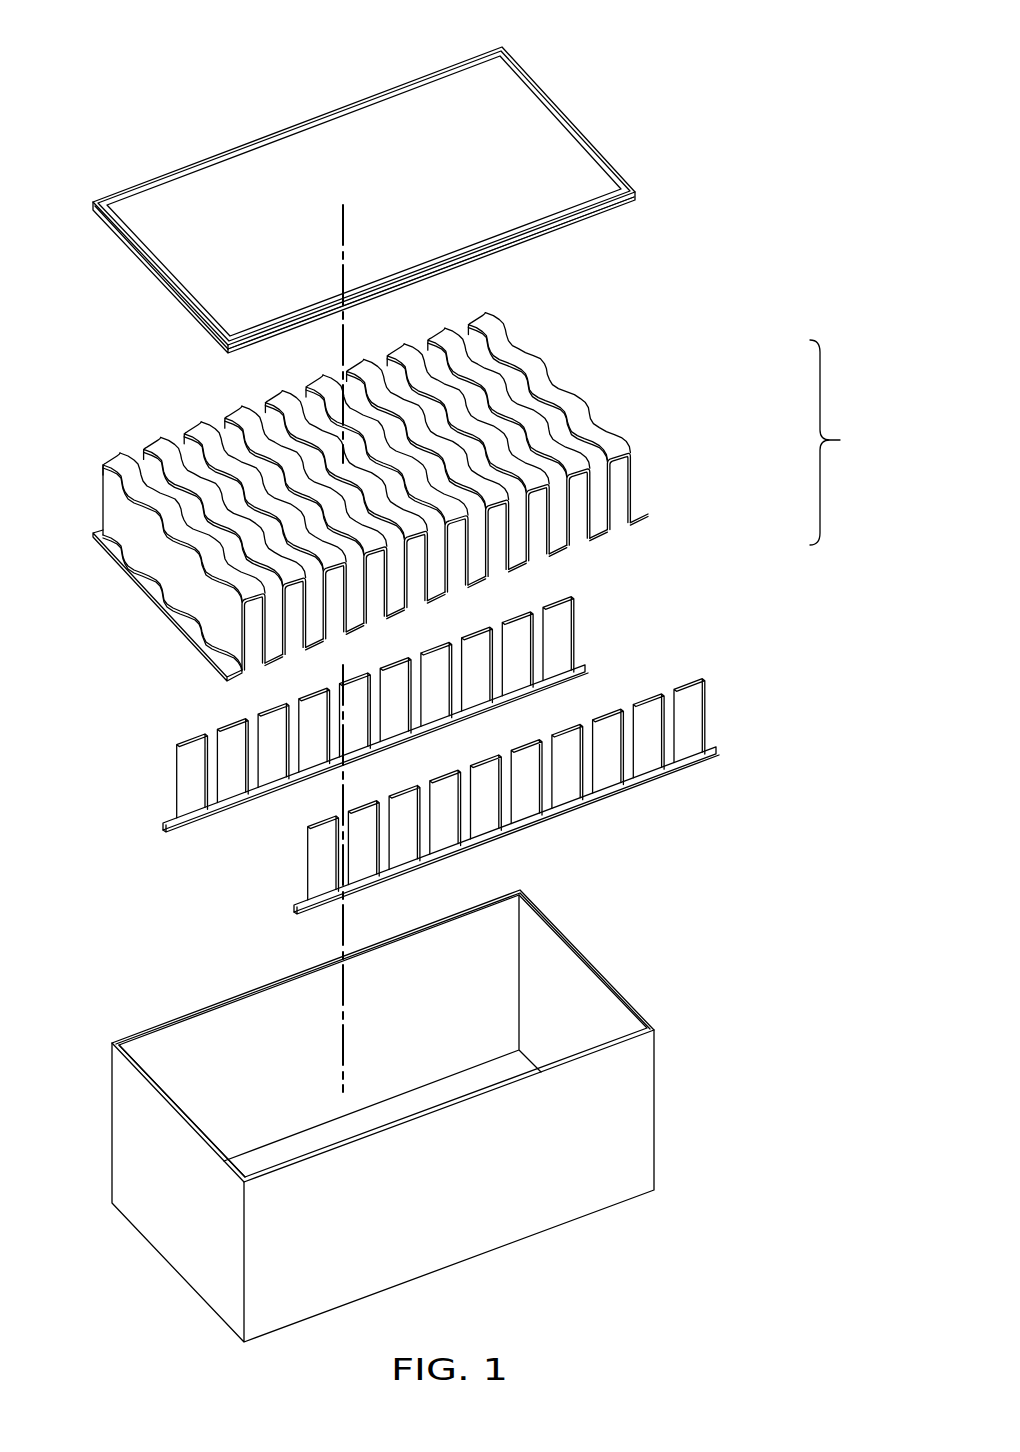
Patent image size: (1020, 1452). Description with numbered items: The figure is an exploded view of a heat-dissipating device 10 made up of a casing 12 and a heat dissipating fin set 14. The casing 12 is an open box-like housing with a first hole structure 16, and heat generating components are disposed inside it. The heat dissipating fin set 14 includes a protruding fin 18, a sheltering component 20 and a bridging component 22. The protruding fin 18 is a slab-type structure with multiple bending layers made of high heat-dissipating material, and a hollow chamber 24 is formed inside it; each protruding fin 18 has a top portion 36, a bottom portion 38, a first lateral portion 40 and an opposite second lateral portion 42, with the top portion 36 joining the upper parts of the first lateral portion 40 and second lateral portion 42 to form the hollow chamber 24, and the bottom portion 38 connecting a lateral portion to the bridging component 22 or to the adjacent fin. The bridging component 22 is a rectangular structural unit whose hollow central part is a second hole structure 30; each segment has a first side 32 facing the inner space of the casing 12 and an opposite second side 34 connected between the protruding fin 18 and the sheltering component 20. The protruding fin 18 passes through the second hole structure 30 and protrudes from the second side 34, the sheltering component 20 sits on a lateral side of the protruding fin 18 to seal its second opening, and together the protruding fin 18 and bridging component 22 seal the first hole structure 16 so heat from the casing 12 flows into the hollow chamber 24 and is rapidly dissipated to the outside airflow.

The heat-dissipating device 10 is at (699, 94).
The casing 12 is at (622, 1115).
The heat dissipating fin set 14 is at (840, 442).
The first hole structure 16 is at (222, 1050).
The protruding fin 18 is at (435, 497).
The sheltering component 20 is at (560, 622).
The bridging component 22 is at (592, 217).
The hollow chamber 24 is at (242, 616).
The second hole structure 30 is at (250, 193).
The first side 32 is at (195, 320).
The second side 34 is at (175, 288).
The top portion 36 is at (585, 412).
The bottom portion 38 is at (600, 547).
The first lateral portion 40 is at (632, 477).
The second lateral portion 42 is at (617, 495).